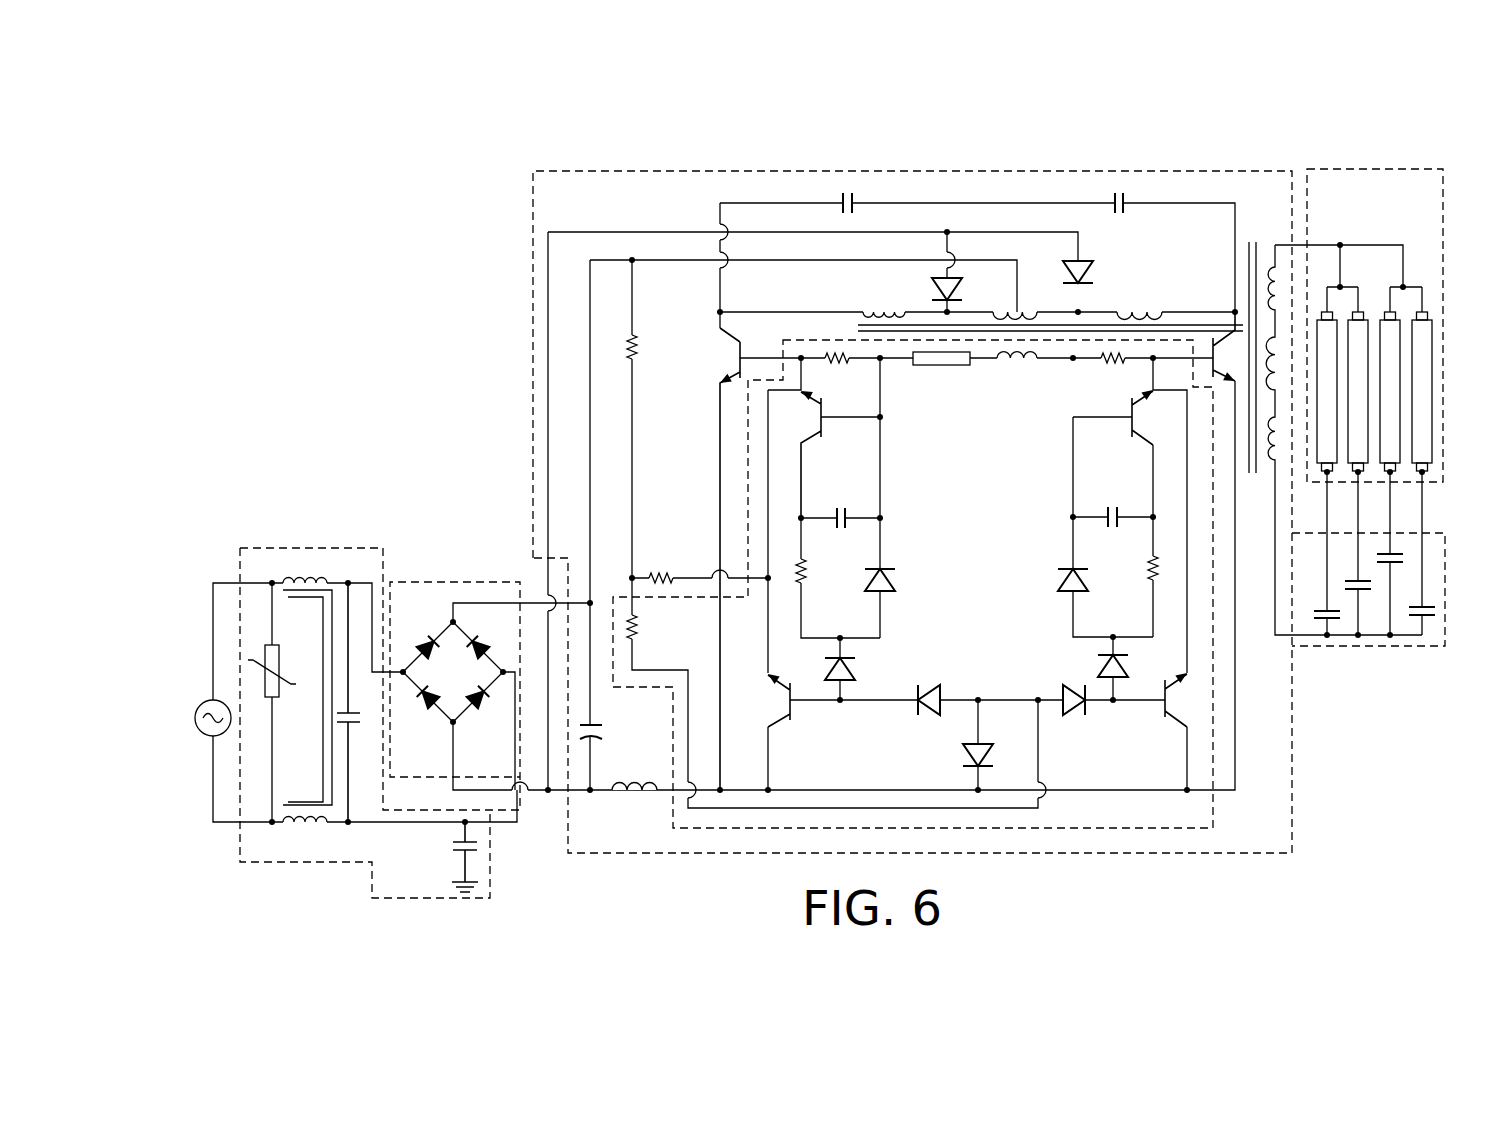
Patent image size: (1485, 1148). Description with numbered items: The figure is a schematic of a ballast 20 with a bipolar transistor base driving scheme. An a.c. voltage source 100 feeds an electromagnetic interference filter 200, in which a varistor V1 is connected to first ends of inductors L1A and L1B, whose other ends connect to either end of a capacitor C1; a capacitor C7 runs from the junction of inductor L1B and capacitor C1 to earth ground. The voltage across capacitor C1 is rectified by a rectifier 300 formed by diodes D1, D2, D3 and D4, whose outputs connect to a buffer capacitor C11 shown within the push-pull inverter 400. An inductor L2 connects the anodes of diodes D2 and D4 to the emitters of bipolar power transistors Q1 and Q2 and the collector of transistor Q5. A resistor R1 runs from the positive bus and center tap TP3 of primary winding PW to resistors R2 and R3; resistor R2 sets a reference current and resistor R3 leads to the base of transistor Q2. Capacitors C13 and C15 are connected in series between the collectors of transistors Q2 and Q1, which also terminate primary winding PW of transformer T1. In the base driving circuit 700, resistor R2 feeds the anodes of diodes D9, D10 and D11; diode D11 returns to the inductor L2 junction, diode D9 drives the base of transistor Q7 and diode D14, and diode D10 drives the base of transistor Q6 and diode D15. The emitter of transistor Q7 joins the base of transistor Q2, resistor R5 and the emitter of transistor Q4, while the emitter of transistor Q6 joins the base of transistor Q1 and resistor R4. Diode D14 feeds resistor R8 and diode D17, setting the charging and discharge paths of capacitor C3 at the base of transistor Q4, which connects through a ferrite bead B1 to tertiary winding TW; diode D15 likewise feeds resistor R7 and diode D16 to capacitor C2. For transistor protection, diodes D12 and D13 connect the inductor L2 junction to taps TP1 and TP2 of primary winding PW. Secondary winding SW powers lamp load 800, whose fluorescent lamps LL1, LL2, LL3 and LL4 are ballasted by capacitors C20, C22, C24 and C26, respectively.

The ballast 20 is at (380, 407).
The a.c. voltage source 100 is at (203, 735).
The electromagnetic interference (EMI) filter 200 is at (285, 545).
The rectifier 300 is at (473, 580).
The inverter 400 is at (530, 418).
The base driving circuit 700 is at (1216, 822).
The lamp load 800 is at (1404, 166).
The inductor L1A is at (307, 679).
The inductor L1B is at (305, 835).
The varistor V1 is at (276, 702).
The capacitor C1 is at (357, 702).
The capacitor C7 is at (453, 857).
The diode D1 is at (421, 639).
The diode D2 is at (423, 708).
The diode D3 is at (489, 638).
The diode D4 is at (489, 707).
The buffer capacitor C11 is at (611, 734).
The inductor L2 is at (634, 802).
The resistor R1 is at (646, 348).
The resistor R2 is at (646, 628).
The resistor R3 is at (700, 567).
The bipolar NPN transistor Q2 is at (723, 559).
The bipolar NPN transistor Q1 is at (1230, 348).
The bipolar NPN transistor Q4 is at (834, 452).
The NPN transistor Q5 is at (1121, 415).
The bipolar NPN transistor Q6 is at (1145, 698).
The bipolar NPN transistor Q7 is at (838, 698).
The resistor R4 is at (840, 373).
The resistor R5 is at (1113, 372).
The resistor R7 is at (1143, 569).
The resistor R8 is at (816, 572).
The ferrite bead B1 is at (941, 373).
The tertiary winding TW is at (1017, 370).
The capacitor C2 is at (1113, 504).
The capacitor C3 is at (840, 505).
The capacitor C13 is at (868, 197).
The capacitor C15 is at (1140, 196).
The diode D9 is at (990, 715).
The diode D10 is at (1079, 715).
The diode D11 is at (1000, 745).
The diode D12 is at (932, 283).
The diode D13 is at (1065, 273).
The diode D14 is at (861, 669).
The diode D15 is at (1134, 668).
The diode D16 is at (1058, 581).
The diode D17 is at (903, 581).
The tap TP1 is at (933, 312).
The tap TP2 is at (1078, 312).
The center tap TP3 is at (1017, 312).
The primary winding PW is at (1142, 305).
The transformer T1 is at (1057, 357).
The secondary winding SW is at (1269, 263).
The fluorescent lamp LL1 is at (1323, 332).
The fluorescent lamp LL2 is at (1363, 330).
The fluorescent lamp LL3 is at (1390, 358).
The fluorescent lamp LL4 is at (1422, 408).
The capacitor C20 is at (1312, 617).
The capacitor C22 is at (1345, 583).
The capacitor C24 is at (1375, 556).
The capacitor C26 is at (1412, 614).